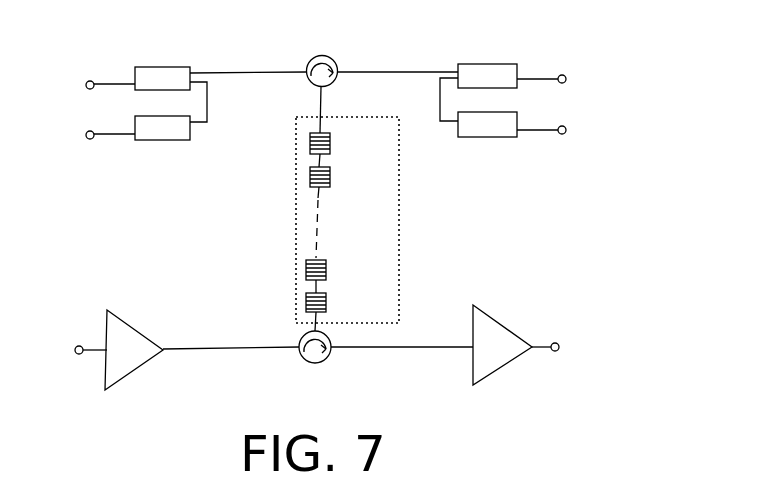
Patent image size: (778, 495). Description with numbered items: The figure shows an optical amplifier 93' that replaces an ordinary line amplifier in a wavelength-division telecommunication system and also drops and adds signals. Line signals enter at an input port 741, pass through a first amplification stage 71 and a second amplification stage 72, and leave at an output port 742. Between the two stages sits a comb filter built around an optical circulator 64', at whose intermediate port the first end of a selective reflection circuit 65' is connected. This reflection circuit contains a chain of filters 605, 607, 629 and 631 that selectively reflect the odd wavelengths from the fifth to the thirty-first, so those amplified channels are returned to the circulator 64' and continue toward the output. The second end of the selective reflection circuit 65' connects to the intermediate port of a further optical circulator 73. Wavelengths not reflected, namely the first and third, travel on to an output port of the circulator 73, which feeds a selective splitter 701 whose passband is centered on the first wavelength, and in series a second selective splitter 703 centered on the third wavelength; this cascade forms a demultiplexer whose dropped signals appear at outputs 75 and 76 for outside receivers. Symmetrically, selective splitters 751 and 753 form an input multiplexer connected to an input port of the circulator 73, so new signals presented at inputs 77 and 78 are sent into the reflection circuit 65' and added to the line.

The output 75 is at (80, 85).
The output 76 is at (80, 133).
The input 77 is at (570, 80).
The input 78 is at (572, 132).
The selective splitter 701 is at (163, 62).
The second selective splitter 703 is at (160, 148).
The selective splitter 751 is at (489, 58).
The selective splitter 753 is at (483, 146).
The optical circulator 73 is at (322, 53).
The optical circulator 64' is at (310, 362).
The selective reflection circuit 65' is at (373, 220).
The filter 631 is at (333, 146).
The filter 629 is at (333, 178).
The filter 607 is at (329, 271).
The filter 605 is at (329, 304).
The amplification stage 71 is at (137, 378).
The amplification stage 72 is at (500, 378).
The input port 741 is at (73, 342).
The output port 742 is at (549, 338).
The optical amplifier 93' is at (664, 221).